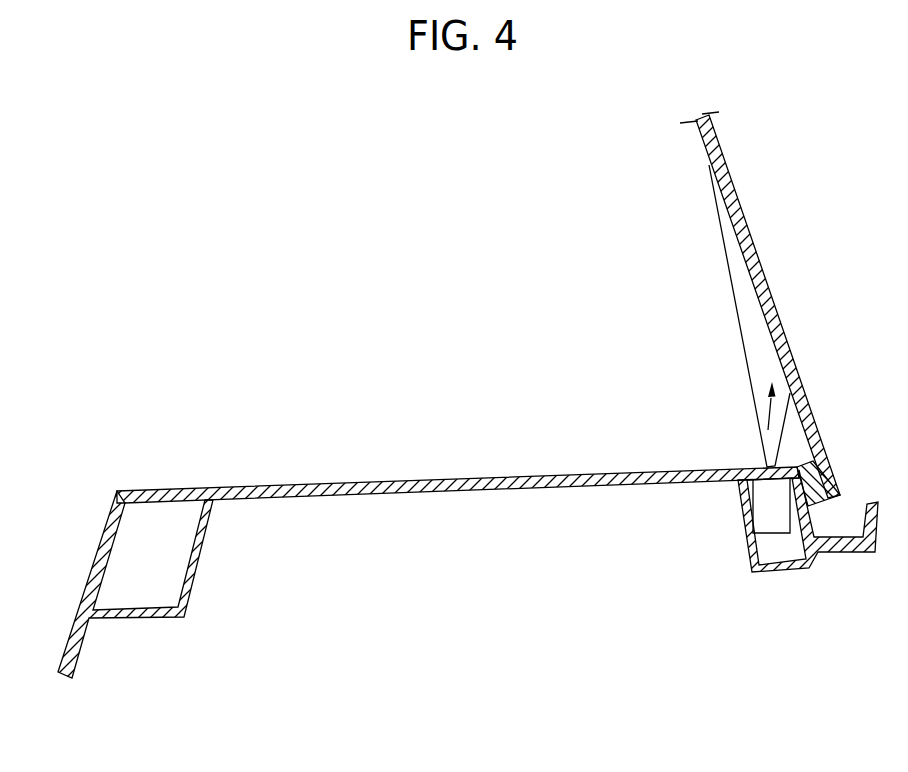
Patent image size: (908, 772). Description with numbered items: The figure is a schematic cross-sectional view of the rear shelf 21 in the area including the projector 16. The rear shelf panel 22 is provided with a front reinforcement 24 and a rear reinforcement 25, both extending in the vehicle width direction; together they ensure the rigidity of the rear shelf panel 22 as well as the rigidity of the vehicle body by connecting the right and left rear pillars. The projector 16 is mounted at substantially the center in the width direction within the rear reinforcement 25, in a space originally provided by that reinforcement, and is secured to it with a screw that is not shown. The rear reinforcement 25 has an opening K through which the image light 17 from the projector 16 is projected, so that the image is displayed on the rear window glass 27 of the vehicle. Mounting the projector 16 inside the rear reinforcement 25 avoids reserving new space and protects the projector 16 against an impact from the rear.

The projector 16 is at (745, 473).
The image light 17 is at (735, 272).
The rear shelf 21 is at (459, 393).
The rear shelf panel 22 is at (332, 482).
The front reinforcement 24 is at (200, 560).
The rear reinforcement 25 is at (783, 573).
The rear window glass 27 is at (753, 245).
The opening K is at (765, 462).